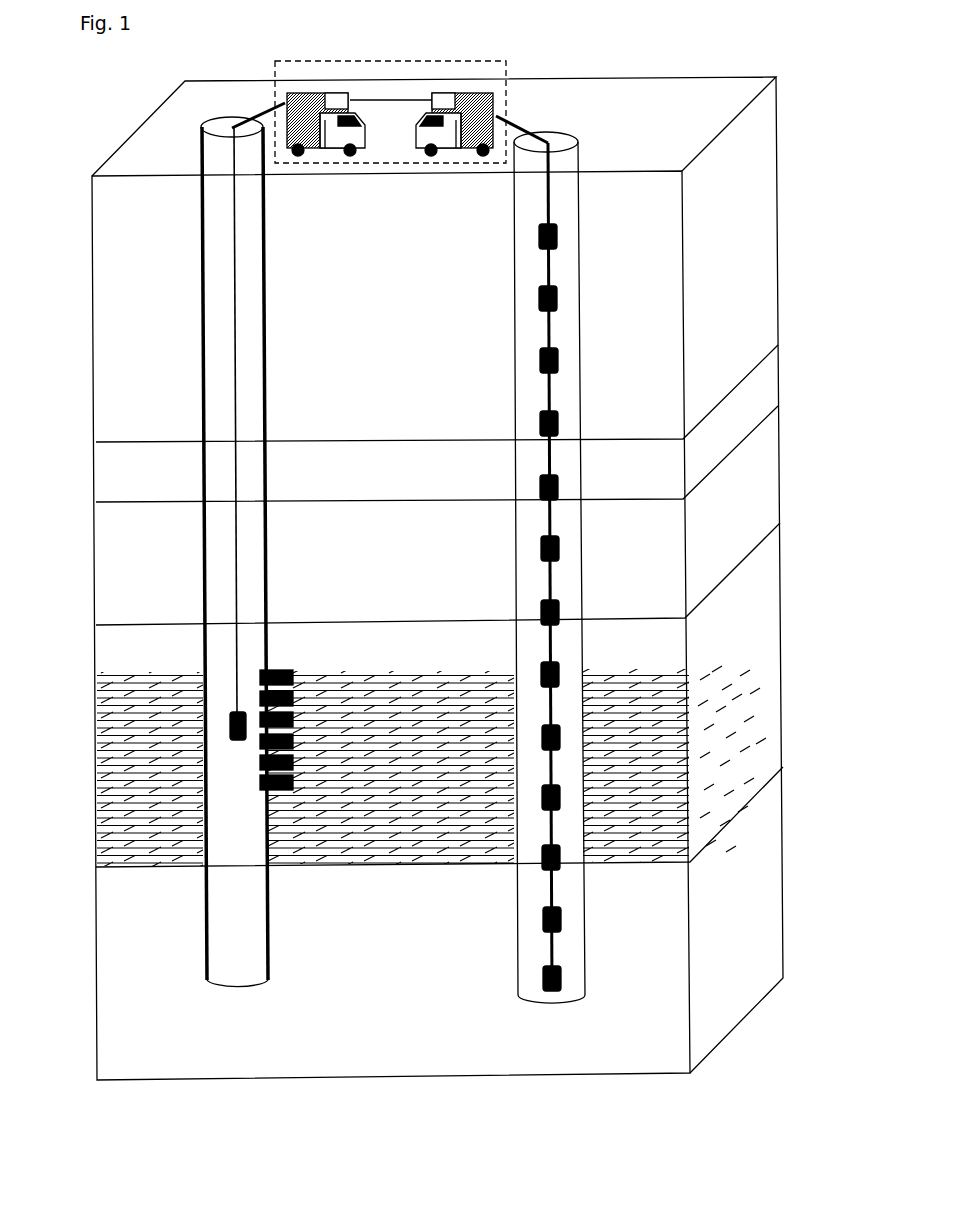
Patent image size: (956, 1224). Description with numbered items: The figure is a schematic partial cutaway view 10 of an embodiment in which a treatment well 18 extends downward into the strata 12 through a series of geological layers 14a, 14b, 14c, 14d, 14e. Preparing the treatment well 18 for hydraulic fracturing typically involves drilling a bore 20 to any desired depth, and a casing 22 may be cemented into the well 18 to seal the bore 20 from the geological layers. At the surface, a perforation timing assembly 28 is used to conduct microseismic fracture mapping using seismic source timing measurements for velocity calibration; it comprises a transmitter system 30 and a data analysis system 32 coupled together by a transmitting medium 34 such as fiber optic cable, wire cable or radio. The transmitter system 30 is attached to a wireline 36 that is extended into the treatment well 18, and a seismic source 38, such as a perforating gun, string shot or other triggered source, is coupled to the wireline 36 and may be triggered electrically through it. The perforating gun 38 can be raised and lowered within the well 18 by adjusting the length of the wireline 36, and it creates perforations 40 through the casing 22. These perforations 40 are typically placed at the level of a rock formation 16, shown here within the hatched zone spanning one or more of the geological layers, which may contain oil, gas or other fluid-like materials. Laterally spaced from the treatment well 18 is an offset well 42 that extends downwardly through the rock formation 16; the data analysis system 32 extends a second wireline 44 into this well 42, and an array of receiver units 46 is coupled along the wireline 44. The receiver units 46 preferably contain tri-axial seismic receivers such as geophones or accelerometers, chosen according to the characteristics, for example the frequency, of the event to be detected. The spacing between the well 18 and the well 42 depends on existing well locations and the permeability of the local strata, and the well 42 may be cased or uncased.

The partial cutaway view 10 is at (96, 147).
The strata 12 is at (783, 102).
The geological layer 14a is at (742, 266).
The geological layer 14b is at (745, 436).
The geological layer 14c is at (738, 536).
The geological layer 14d is at (755, 636).
The geological layer 14e is at (742, 916).
The rock formation 16 is at (88, 673).
The treatment well 18 is at (193, 137).
The bore 20 is at (217, 157).
The casing 22 is at (261, 360).
The perforation timing assembly 28 is at (482, 62).
The transmitter system 30 is at (320, 152).
The data analysis system 32 is at (465, 152).
The transmitting medium 34 is at (390, 98).
The wireline 36 is at (229, 286).
The seismic source 38 is at (237, 741).
The perforations 40 is at (273, 670).
The well 42 is at (577, 148).
The wireline 44 is at (543, 271).
The receiver units 46 is at (562, 240).